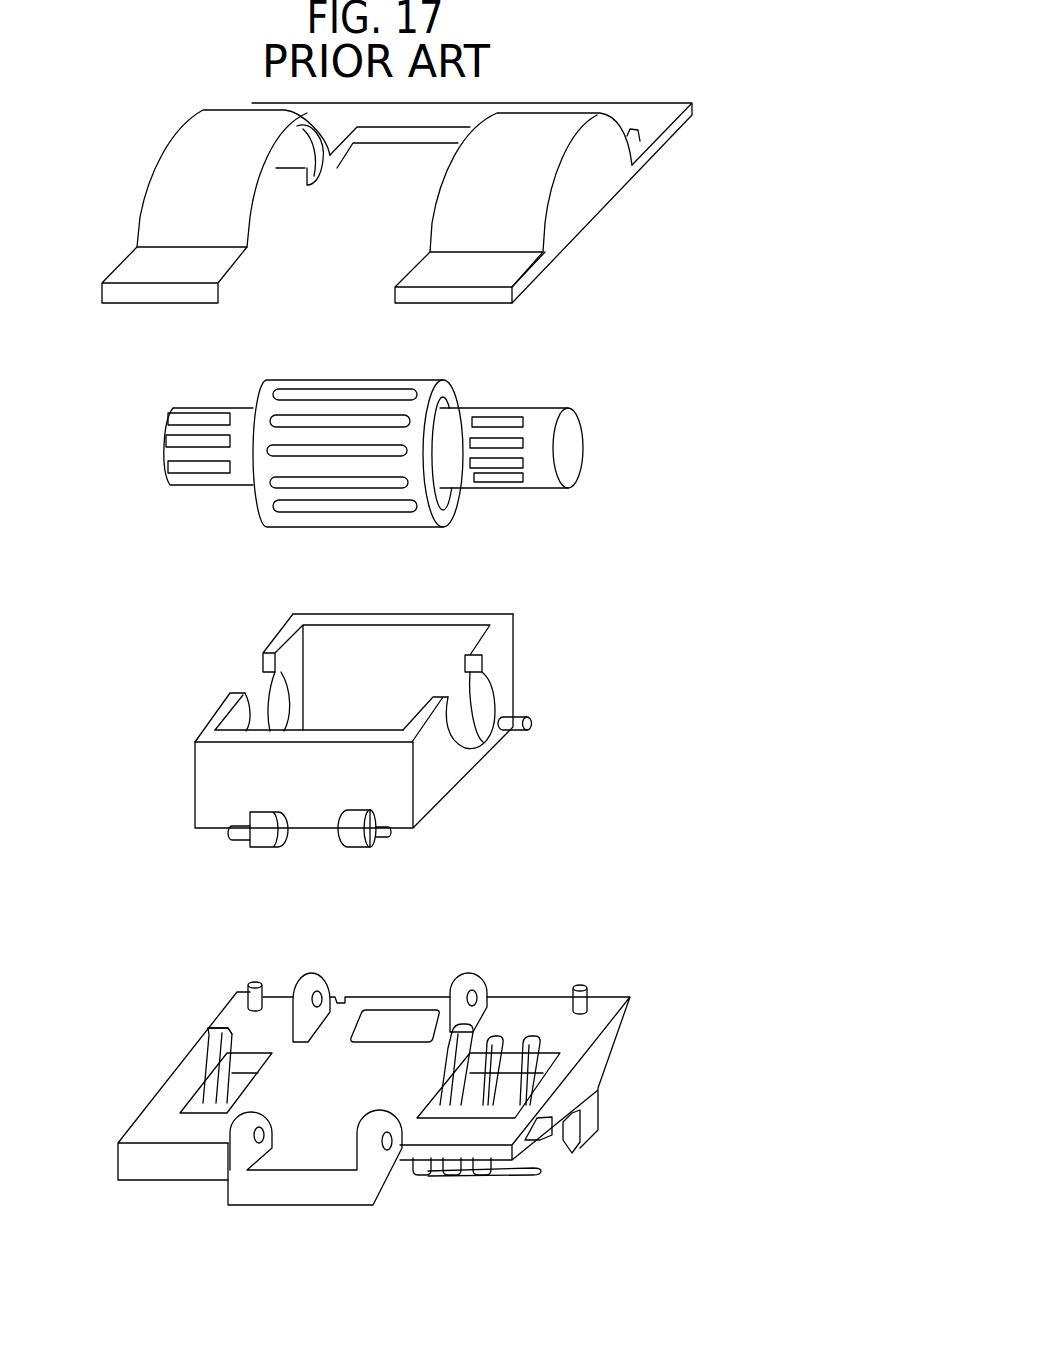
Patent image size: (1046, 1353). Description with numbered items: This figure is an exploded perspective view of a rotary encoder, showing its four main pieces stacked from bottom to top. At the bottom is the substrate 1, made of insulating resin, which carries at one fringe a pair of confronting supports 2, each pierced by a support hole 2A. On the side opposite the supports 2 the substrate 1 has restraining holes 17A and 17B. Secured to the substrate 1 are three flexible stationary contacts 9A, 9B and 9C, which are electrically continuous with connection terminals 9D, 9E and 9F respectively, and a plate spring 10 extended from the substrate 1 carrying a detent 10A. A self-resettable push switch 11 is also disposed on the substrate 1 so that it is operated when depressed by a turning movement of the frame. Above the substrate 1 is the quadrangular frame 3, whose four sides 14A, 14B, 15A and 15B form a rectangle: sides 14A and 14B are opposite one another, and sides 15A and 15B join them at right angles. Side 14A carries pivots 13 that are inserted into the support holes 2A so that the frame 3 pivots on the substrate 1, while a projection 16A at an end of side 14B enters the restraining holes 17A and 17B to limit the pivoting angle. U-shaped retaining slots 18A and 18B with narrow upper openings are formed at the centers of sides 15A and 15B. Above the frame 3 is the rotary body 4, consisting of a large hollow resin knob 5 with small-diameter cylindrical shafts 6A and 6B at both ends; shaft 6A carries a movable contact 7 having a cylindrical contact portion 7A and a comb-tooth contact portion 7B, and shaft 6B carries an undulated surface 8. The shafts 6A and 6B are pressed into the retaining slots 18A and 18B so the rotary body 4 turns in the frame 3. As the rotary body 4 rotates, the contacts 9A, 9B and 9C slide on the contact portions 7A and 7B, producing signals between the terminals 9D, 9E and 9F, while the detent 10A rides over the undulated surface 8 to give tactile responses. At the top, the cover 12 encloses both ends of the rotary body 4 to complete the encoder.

The substrate 1 is at (632, 912).
The supports 2 is at (315, 1195).
The support hole 2A is at (385, 1143).
The quadrangular frame 3 is at (630, 585).
The rotary body 4 is at (605, 337).
The knob 5 is at (350, 383).
The shaft 6A is at (511, 467).
The shaft 6B is at (208, 446).
The movable contact 7 is at (515, 503).
The cylindrical contact portion 7A is at (458, 458).
The comb-tooth contact portion 7B is at (507, 472).
The undulated surface 8 is at (202, 466).
The stationary contact 9A is at (484, 1005).
The stationary contact 9B is at (530, 1010).
The stationary contact 9C is at (580, 987).
The connection terminal 9D is at (422, 1175).
The connection terminal 9E is at (455, 1175).
The connection terminal 9F is at (483, 1177).
The plate spring 10 is at (163, 1033).
The detent 10A is at (218, 1035).
The push switch 11 is at (385, 1025).
The cover 12 is at (590, 177).
The pivot shafts 13 is at (333, 847).
The side 14A is at (377, 773).
The side 14B is at (447, 618).
The side 15A is at (437, 748).
The side 15B is at (215, 712).
The projection 16A is at (520, 722).
The restraining hole 17A is at (475, 990).
The restraining hole 17B is at (320, 997).
The retaining slot 18A is at (465, 708).
The retaining slot 18B is at (262, 702).